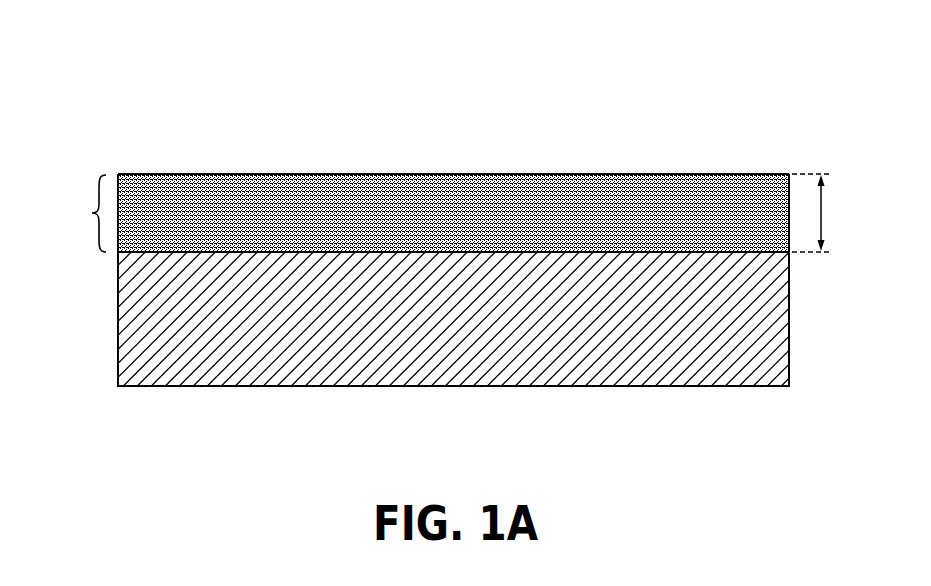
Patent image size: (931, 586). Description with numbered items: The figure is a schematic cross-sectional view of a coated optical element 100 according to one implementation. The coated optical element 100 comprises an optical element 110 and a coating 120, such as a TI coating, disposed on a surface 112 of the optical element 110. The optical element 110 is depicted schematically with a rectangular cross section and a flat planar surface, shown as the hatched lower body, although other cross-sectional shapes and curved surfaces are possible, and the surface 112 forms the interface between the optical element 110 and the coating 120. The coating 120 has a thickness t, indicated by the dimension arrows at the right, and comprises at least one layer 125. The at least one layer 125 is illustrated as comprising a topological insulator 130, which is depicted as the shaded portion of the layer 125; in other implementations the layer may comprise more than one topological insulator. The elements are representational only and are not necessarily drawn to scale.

The coated optical element 100 is at (199, 54).
The optical element 110 is at (117, 332).
The surface of the optical element 112 is at (653, 262).
The coating 120 is at (419, 183).
The at least one layer 125 is at (695, 166).
The topological insulator 130 is at (347, 207).